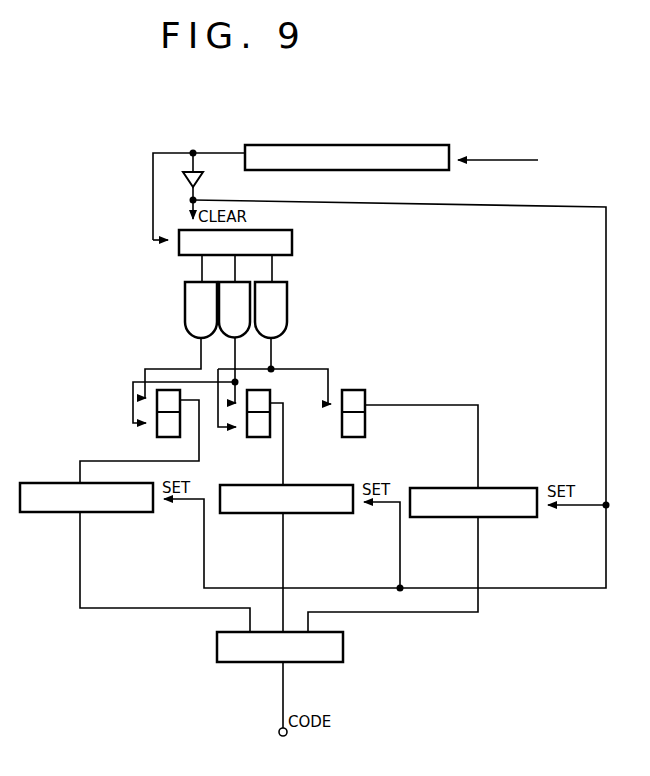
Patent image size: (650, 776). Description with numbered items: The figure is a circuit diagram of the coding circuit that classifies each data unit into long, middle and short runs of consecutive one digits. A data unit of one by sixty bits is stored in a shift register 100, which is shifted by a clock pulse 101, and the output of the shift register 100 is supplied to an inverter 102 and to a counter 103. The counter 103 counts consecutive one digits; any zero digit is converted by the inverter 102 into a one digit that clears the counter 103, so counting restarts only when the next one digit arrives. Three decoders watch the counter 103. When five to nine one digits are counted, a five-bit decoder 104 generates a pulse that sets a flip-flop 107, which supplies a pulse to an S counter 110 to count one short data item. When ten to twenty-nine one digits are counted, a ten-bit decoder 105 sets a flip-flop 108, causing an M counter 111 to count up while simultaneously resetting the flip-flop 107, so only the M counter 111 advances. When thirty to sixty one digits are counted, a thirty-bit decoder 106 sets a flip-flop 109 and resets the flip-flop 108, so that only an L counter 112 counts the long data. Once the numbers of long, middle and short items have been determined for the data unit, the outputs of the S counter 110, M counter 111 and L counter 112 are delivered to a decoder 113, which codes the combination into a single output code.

The shift register 100 is at (410, 145).
The clock pulse 101 is at (497, 157).
The inverter 102 is at (201, 182).
The counter 103 is at (293, 243).
The 5-bit decoder 104 is at (186, 332).
The 10-bit decoder 105 is at (243, 282).
The 30-bit decoder 106 is at (287, 325).
The flip-flop 107 is at (160, 438).
The flip-flop 108 is at (271, 437).
The flip-flop 109 is at (367, 440).
The S counter 110 is at (70, 512).
The M counter 111 is at (267, 517).
The L counter 112 is at (460, 520).
The decoder 113 is at (316, 662).